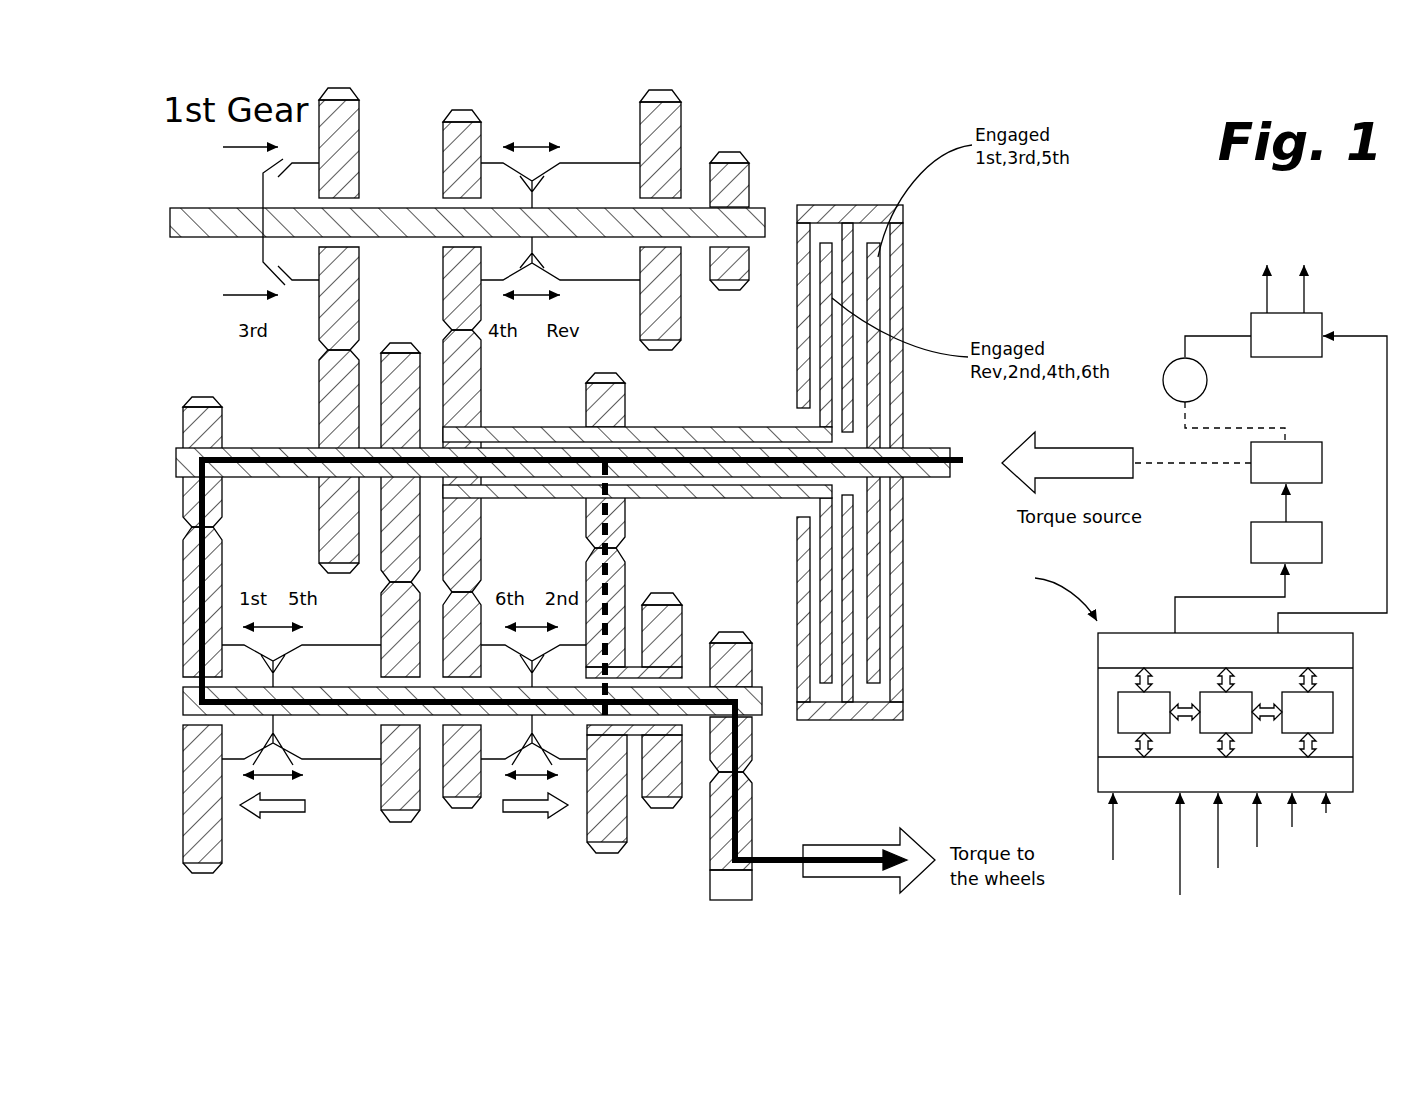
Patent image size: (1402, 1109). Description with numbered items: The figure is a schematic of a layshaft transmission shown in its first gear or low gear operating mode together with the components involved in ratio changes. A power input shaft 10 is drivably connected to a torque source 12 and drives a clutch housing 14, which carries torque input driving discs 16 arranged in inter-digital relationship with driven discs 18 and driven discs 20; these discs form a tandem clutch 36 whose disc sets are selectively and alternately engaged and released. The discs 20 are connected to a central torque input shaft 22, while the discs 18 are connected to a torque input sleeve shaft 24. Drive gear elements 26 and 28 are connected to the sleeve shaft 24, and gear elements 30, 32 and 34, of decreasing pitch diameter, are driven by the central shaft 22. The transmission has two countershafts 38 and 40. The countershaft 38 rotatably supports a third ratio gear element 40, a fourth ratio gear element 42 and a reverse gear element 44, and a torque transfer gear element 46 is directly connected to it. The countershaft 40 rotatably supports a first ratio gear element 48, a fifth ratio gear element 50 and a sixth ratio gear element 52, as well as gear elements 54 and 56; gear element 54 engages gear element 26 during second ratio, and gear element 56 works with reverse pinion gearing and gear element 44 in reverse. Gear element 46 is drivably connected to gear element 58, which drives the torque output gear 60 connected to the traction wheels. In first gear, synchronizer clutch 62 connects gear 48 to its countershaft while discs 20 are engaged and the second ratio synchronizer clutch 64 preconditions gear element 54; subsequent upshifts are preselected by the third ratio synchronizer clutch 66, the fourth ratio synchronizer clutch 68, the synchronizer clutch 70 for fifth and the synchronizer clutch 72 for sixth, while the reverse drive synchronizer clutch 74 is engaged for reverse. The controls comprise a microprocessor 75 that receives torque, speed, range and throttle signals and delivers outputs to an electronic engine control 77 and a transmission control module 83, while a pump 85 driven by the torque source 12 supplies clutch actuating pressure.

The power input shaft 10 is at (935, 478).
The torque source 12 is at (1303, 442).
The clutch housing 14 is at (865, 421).
The torque input driving discs 16 is at (838, 235).
The driven discs 18 is at (816, 338).
The driven discs 20 is at (890, 378).
The central torque input shaft 22 is at (775, 487).
The torque input sleeve shaft 24 is at (740, 427).
The drive gear element 26 is at (650, 385).
The drive gear element 28 is at (481, 400).
The drive gear element 30 is at (400, 343).
The gear element 32 is at (319, 423).
The gear element 34 is at (183, 425).
The tandem clutch 36 is at (872, 204).
The countershaft 38 is at (632, 208).
The countershaft 40 is at (359, 143).
The fourth ratio countershaft gear element 42 is at (481, 145).
The reverse countershaft gear element 44 is at (681, 143).
The torque transfer gear element 46 is at (749, 190).
The first ratio gear element 48 is at (183, 605).
The fifth ratio gear element 50 is at (381, 783).
The sixth ratio gear element 52 is at (443, 783).
The countershaft gear element 54 is at (628, 590).
The countershaft gear element 56 is at (683, 640).
The gear element 58 is at (753, 667).
The torque output gear 60 is at (753, 827).
The synchronizer clutch 62 is at (260, 655).
The second ratio synchronizer clutch 64 is at (547, 653).
The third ratio synchronizer clutch 66 is at (288, 173).
The fourth ratio synchronizer clutch 68 is at (512, 173).
The synchronizer clutch 70 is at (288, 653).
The synchronizer clutch 72 is at (519, 655).
The reverse drive synchronizer clutch 74 is at (547, 180).
The microprocessor 75 is at (1147, 632).
The electronic engine control 77 is at (1303, 522).
The transmission control module 83 is at (1322, 325).
The pump 85 is at (1166, 372).